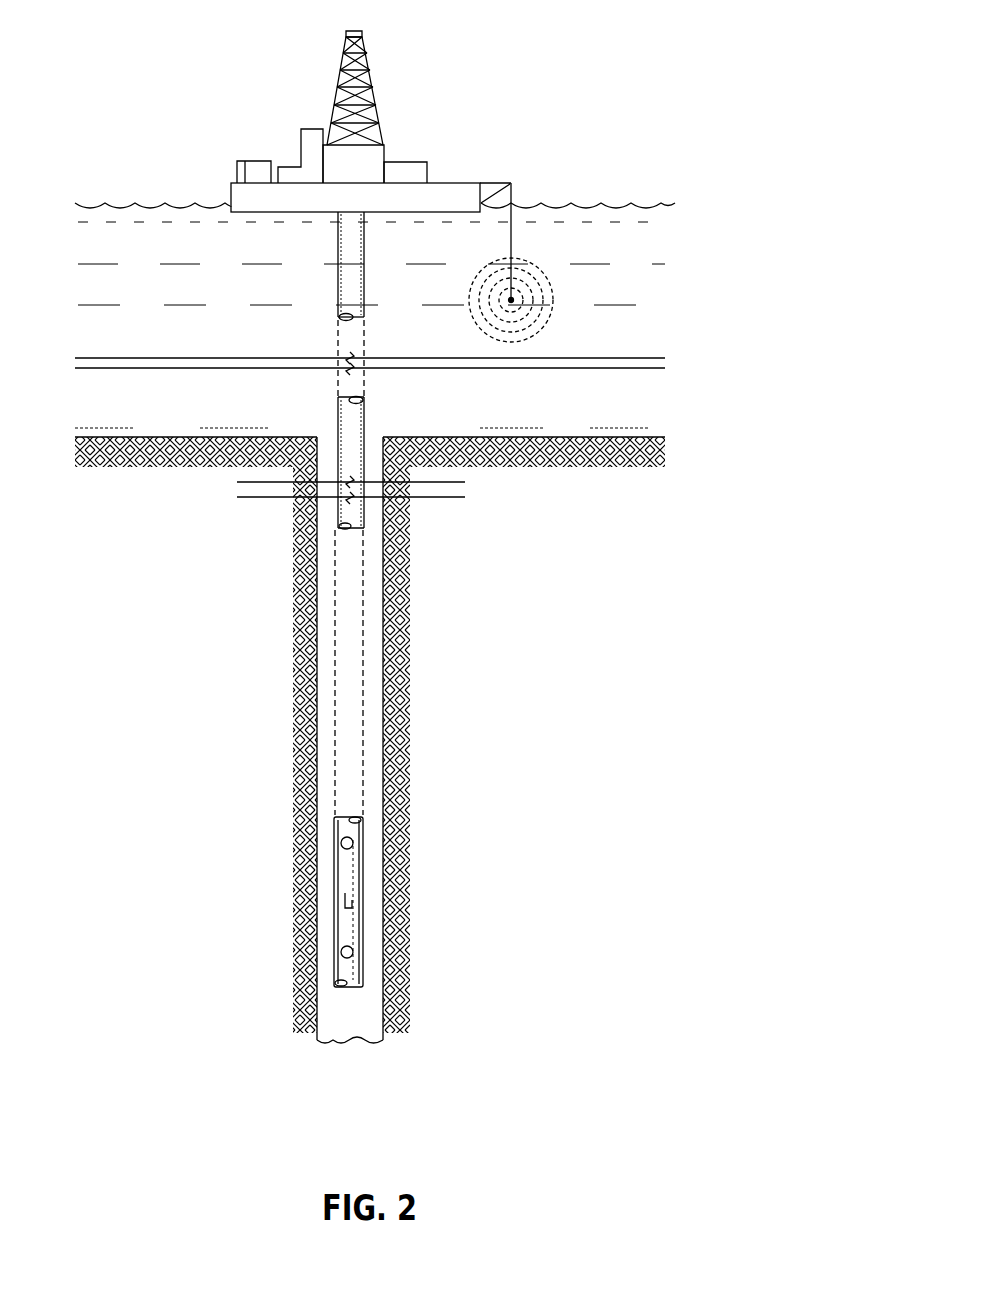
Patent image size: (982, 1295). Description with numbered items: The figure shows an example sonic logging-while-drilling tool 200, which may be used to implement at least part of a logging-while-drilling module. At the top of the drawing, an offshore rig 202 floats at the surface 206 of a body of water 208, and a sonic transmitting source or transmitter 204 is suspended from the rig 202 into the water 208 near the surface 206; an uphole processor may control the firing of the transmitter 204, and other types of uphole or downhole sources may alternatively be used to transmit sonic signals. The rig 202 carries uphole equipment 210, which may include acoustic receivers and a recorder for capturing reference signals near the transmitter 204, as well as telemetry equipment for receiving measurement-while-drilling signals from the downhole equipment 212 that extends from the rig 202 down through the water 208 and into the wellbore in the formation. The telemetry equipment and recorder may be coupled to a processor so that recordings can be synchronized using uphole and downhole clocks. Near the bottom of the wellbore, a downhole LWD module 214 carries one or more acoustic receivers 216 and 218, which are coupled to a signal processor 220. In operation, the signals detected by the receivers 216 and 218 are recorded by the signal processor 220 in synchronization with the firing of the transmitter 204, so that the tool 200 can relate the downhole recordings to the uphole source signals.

The sonic logging-while-drilling tool 200 is at (390, 802).
The offshore rig 202 is at (436, 138).
The transmitter 204 is at (513, 302).
The surface 206 is at (648, 206).
The water 208 is at (553, 218).
The uphole equipment 210 is at (281, 137).
The downhole equipment 212 is at (298, 800).
The downhole LWD module 214 is at (370, 904).
The acoustic receiver 216 is at (339, 843).
The acoustic receiver 218 is at (339, 951).
The signal processor 220 is at (345, 902).